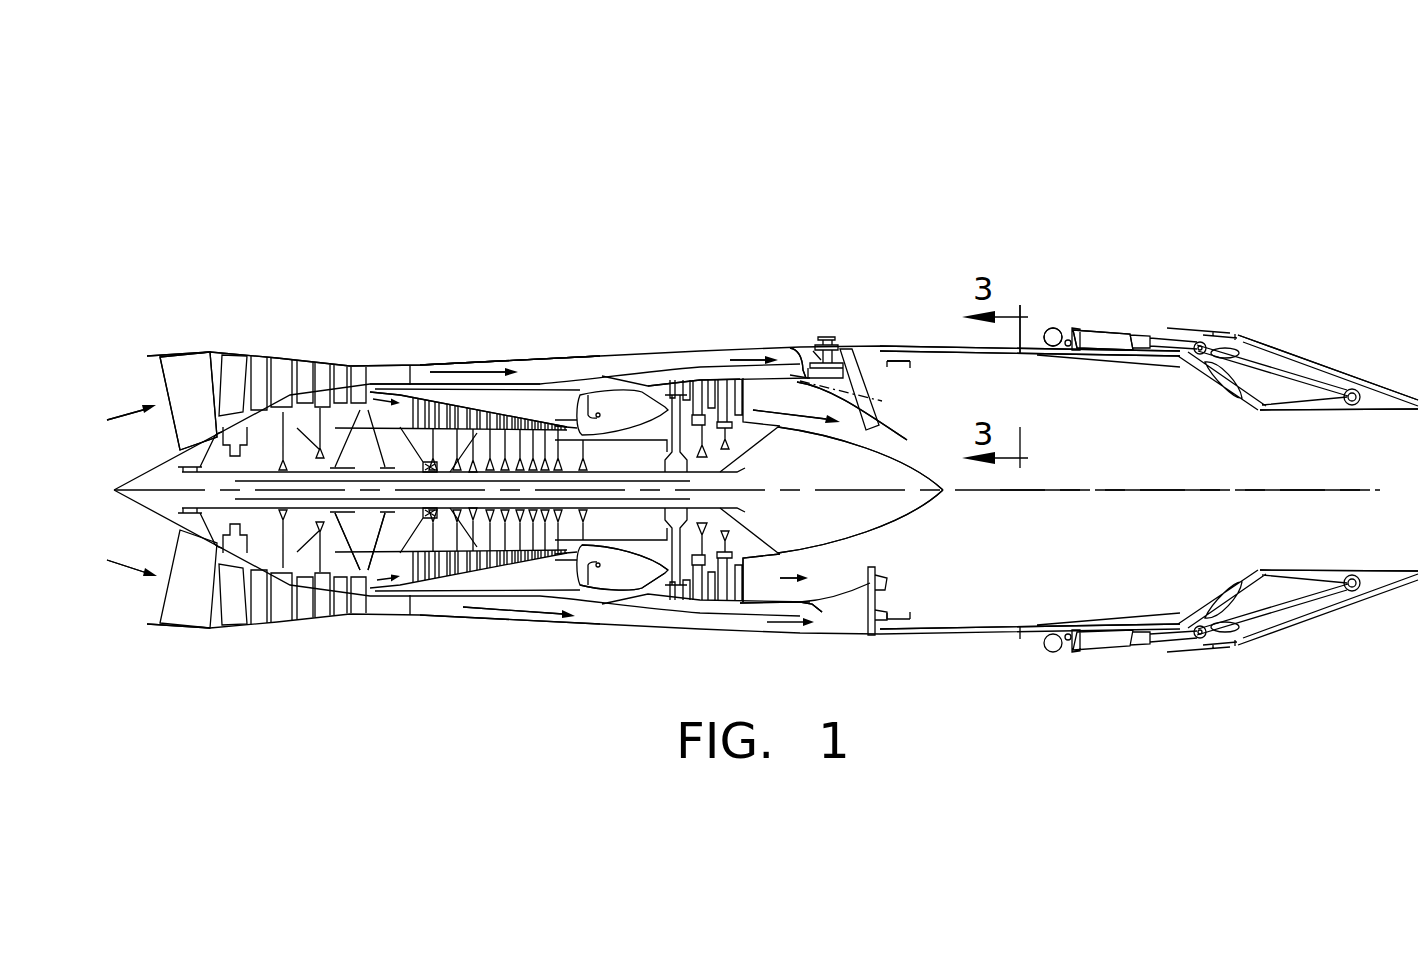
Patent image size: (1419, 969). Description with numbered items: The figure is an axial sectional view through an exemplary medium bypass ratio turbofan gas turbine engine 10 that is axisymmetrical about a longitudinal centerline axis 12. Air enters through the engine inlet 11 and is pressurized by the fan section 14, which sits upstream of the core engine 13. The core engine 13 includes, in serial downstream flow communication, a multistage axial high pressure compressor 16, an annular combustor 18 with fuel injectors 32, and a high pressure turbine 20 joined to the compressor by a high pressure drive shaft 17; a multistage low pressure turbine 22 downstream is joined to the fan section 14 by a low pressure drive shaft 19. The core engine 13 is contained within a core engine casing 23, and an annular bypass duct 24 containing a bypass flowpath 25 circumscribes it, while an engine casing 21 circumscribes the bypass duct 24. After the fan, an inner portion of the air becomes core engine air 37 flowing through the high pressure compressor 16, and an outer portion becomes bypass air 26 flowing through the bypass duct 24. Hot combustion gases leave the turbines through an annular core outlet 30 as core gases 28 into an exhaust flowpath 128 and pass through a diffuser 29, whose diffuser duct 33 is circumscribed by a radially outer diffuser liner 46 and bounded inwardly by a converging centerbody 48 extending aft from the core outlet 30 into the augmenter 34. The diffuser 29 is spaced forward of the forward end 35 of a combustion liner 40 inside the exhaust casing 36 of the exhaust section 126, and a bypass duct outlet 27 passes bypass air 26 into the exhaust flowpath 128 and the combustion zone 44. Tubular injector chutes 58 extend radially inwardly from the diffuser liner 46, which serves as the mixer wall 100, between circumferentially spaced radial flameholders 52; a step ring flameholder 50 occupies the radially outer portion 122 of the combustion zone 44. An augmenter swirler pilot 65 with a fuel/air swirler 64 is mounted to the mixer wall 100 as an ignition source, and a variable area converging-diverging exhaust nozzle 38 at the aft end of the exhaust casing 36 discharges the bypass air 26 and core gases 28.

The turbofan gas turbine engine 10 is at (681, 262).
The engine inlet 11 is at (157, 613).
The centerline axis 12 is at (1178, 481).
The core engine 13 is at (470, 580).
The fan section 14 is at (280, 357).
The high pressure compressor 16 is at (468, 407).
The high pressure drive shaft 17 is at (627, 620).
The combustor 18 is at (620, 402).
The low pressure drive shaft 19 is at (643, 633).
The high pressure turbine 20 is at (677, 380).
The engine casing 21 is at (552, 360).
The low pressure turbine 22 is at (731, 377).
The core engine casing 23 is at (530, 607).
The bypass duct 24 is at (537, 370).
The bypass flowpath 25 is at (687, 623).
The bypass air 26 is at (465, 370).
The bypass duct outlet 27 is at (806, 602).
The core gases 28 is at (757, 601).
The diffuser 29 is at (795, 440).
The core outlet 30 is at (787, 630).
The fuel injectors 32 is at (593, 610).
The diffuser duct 33 is at (840, 583).
The augmenter 34 is at (902, 333).
The forward end 35 is at (890, 343).
The exhaust casing 36 is at (1037, 343).
The core engine air 37 is at (377, 620).
The exhaust nozzle 38 is at (1315, 262).
The combustion liner 40 is at (1045, 358).
The combustion zone 44 is at (1023, 556).
The diffuser liner 46 is at (820, 607).
The centerbody 48 is at (943, 492).
The step ring flameholder 50 is at (903, 361).
The radial flameholders 52 is at (880, 420).
The injector chutes 58 is at (890, 585).
The fuel/air swirler 64 is at (789, 372).
The augmenter swirler pilot 65 is at (842, 306).
The mixer wall 100 is at (805, 390).
The radially outer portion 122 is at (908, 362).
The exhaust section 126 is at (1012, 294).
The exhaust flowpath 128 is at (1160, 547).